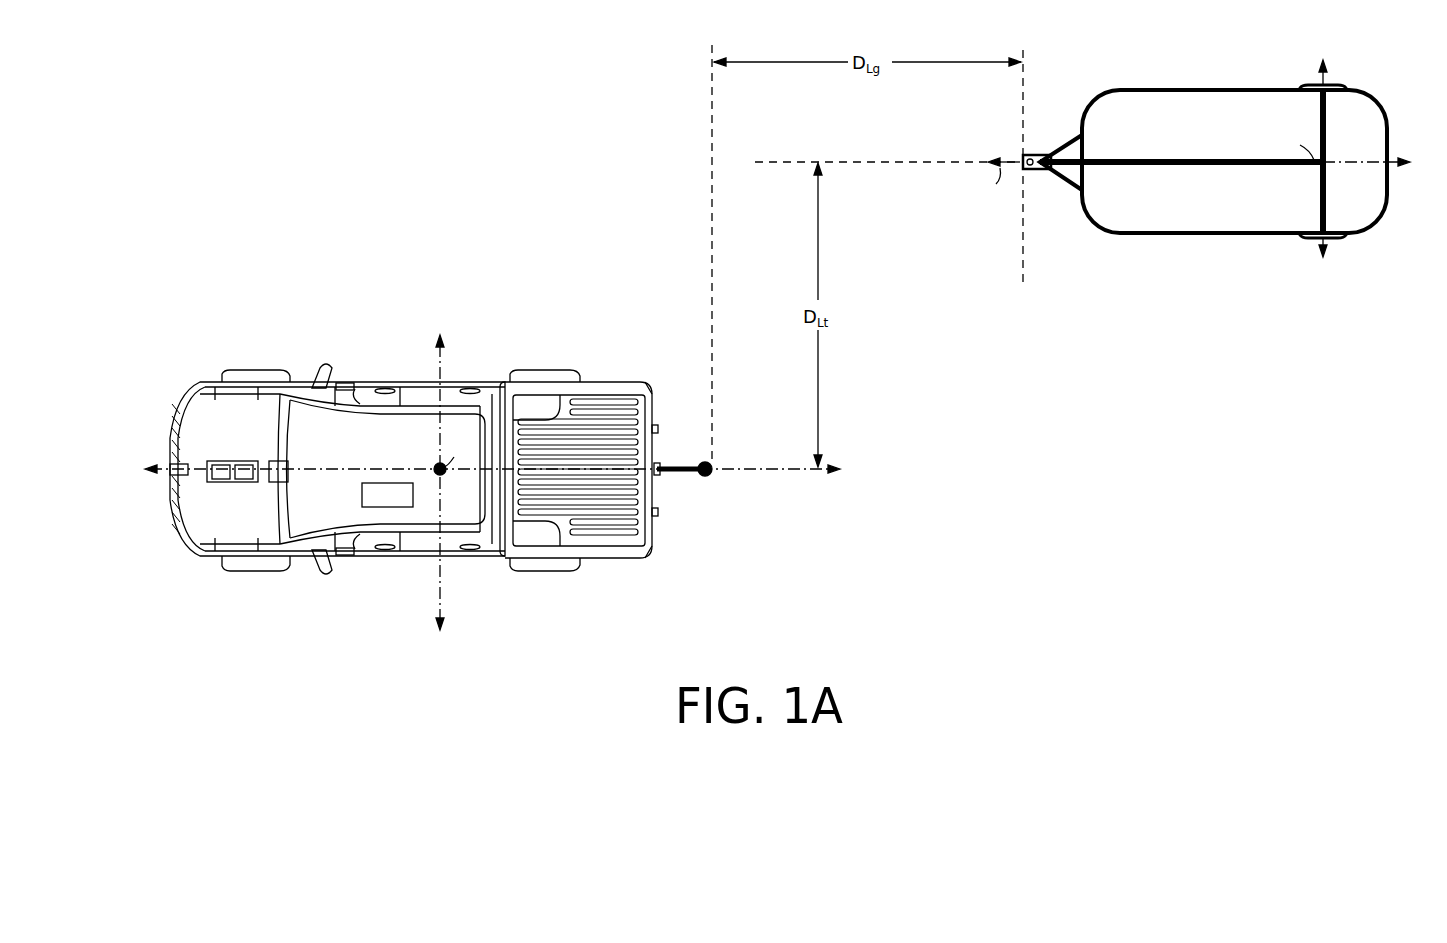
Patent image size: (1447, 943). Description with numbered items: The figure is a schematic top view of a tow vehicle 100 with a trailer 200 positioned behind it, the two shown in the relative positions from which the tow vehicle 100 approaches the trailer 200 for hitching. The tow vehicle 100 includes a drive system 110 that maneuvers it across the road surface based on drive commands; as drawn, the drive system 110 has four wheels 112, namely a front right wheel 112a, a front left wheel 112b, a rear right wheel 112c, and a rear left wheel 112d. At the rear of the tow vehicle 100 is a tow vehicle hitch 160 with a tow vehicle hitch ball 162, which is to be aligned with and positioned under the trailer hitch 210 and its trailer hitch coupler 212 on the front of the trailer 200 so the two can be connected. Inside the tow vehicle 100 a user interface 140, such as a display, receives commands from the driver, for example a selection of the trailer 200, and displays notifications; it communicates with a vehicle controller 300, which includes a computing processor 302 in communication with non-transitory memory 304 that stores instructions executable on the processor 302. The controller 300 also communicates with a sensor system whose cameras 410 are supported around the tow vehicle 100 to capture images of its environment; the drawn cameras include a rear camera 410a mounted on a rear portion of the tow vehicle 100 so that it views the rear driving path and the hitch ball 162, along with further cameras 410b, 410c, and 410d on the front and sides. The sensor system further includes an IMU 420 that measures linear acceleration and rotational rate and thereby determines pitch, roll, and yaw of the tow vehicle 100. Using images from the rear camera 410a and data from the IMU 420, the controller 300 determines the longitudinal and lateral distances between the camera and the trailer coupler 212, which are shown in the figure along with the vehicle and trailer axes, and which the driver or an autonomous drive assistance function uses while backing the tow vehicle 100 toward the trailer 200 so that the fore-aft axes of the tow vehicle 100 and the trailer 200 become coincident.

The tow vehicle 100 is at (191, 362).
The drive system 110 is at (404, 469).
The wheel 112 is at (404, 469).
The front right wheel 112a is at (252, 369).
The front left wheel 112b is at (252, 571).
The rear right wheel 112c is at (560, 368).
The rear left wheel 112d is at (560, 571).
The user interface 140 is at (285, 462).
The tow vehicle hitch 160 is at (684, 474).
The tow vehicle hitch ball 162 is at (706, 480).
The trailer 200 is at (1305, 240).
The trailer hitch 210 is at (1036, 156).
The trailer hitch coupler 212 is at (1024, 158).
The vehicle controller 300 is at (238, 462).
The computing processor 302 is at (222, 479).
The non-transitory memory 304 is at (244, 479).
The camera 410 is at (437, 469).
The rear camera 410a is at (662, 478).
The camera 410b is at (170, 480).
The camera 410c is at (372, 351).
The camera 410d is at (346, 556).
The IMU 420 is at (387, 495).